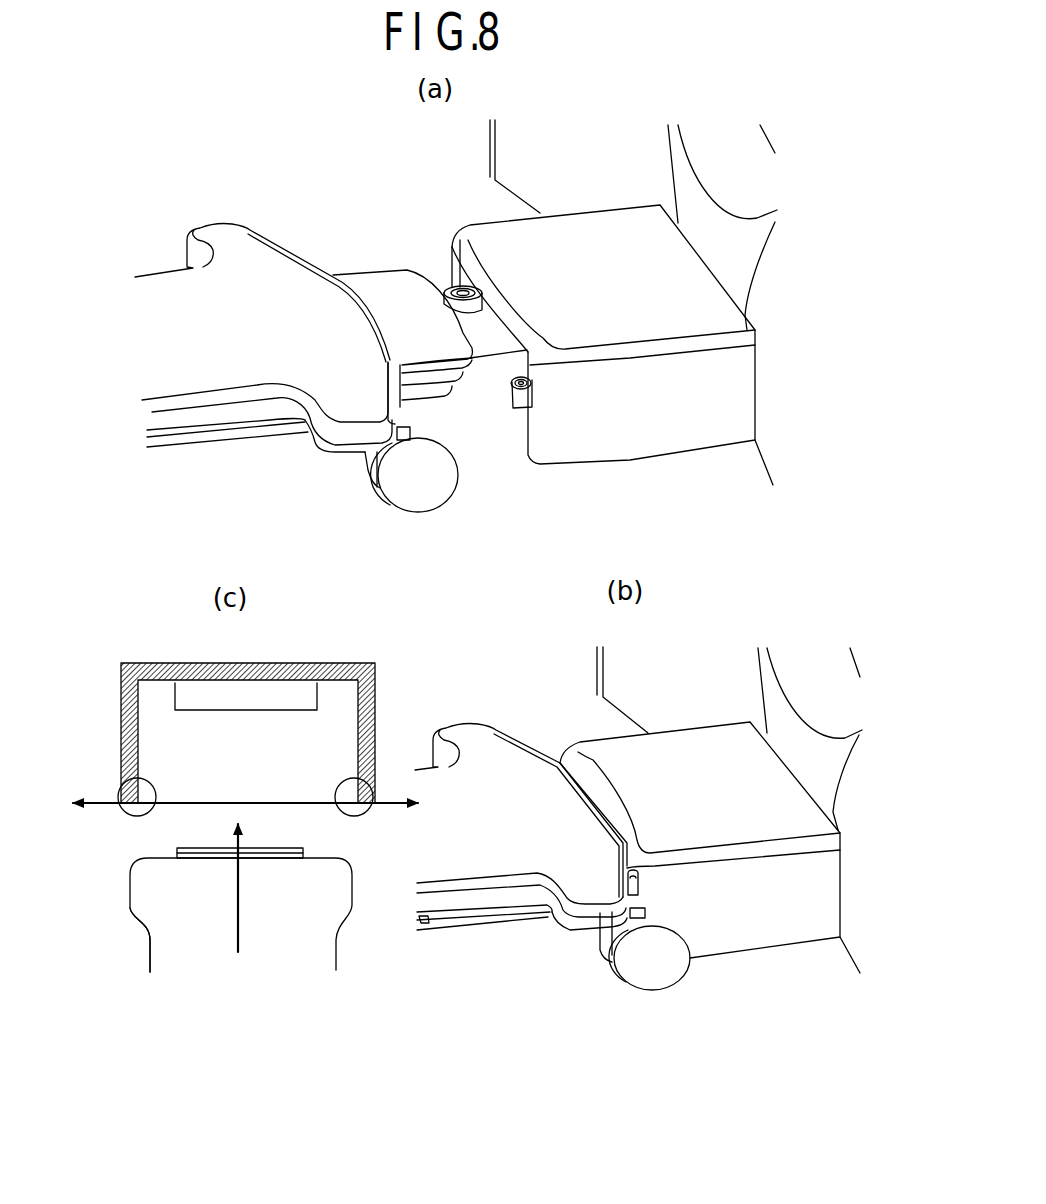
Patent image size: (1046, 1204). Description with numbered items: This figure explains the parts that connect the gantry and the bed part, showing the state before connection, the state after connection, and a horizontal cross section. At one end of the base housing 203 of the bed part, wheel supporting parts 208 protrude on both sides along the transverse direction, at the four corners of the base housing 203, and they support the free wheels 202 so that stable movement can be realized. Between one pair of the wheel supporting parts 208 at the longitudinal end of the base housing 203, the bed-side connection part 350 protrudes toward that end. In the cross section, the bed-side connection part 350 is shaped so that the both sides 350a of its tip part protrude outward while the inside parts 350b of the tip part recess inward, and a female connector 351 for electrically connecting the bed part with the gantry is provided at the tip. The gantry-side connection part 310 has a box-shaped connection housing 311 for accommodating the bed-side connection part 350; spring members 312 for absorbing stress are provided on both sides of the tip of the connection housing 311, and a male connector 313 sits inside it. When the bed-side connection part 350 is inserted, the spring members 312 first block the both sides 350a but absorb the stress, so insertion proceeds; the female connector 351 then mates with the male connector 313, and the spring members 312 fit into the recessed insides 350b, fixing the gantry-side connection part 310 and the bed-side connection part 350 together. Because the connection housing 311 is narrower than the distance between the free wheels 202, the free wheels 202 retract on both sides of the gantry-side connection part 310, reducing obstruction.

The free wheel 202 is at (430, 477).
The base housing 203 is at (271, 380).
The wheel supporting part 208 is at (360, 393).
The gantry-side connection part 310 is at (463, 606).
The connection housing 311 is at (362, 664).
The spring member 312 is at (522, 403).
The male connector 313 is at (283, 700).
The bed-side connection part 350 is at (340, 600).
The both sides of the tip part 350a is at (127, 892).
The inside parts of the tip part 350b is at (152, 952).
The female connector 351 is at (272, 853).